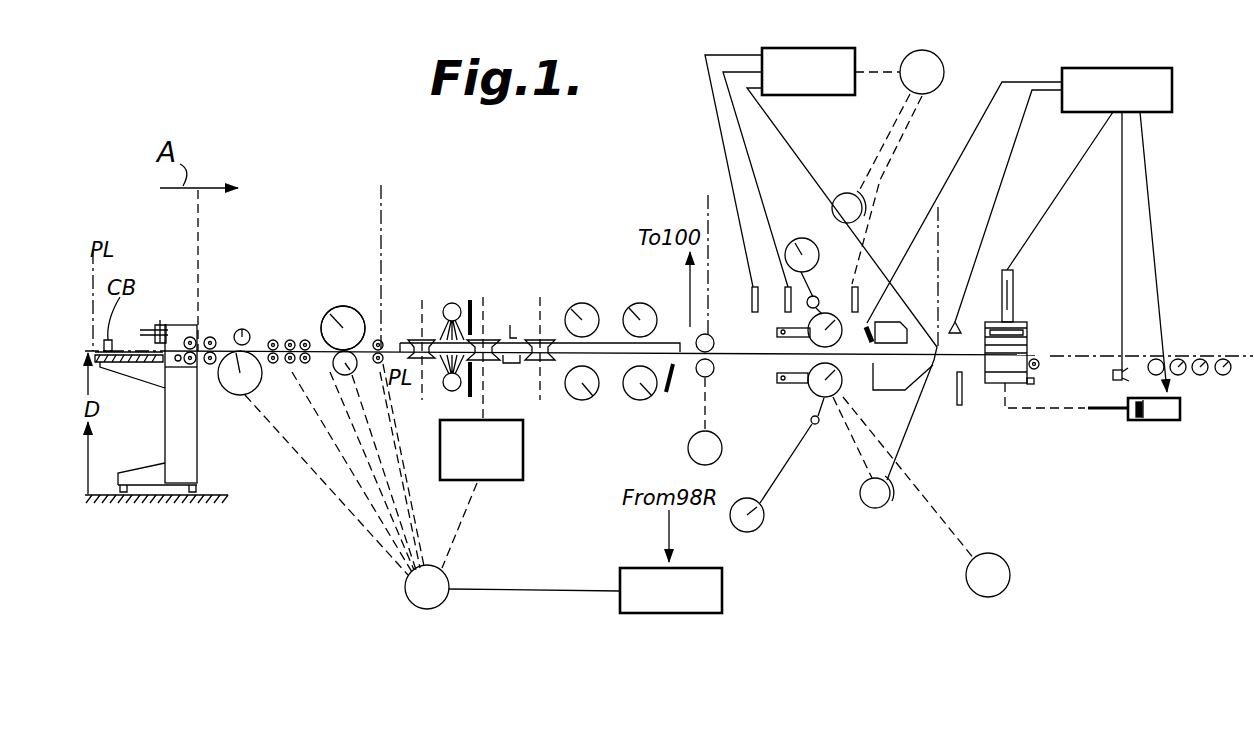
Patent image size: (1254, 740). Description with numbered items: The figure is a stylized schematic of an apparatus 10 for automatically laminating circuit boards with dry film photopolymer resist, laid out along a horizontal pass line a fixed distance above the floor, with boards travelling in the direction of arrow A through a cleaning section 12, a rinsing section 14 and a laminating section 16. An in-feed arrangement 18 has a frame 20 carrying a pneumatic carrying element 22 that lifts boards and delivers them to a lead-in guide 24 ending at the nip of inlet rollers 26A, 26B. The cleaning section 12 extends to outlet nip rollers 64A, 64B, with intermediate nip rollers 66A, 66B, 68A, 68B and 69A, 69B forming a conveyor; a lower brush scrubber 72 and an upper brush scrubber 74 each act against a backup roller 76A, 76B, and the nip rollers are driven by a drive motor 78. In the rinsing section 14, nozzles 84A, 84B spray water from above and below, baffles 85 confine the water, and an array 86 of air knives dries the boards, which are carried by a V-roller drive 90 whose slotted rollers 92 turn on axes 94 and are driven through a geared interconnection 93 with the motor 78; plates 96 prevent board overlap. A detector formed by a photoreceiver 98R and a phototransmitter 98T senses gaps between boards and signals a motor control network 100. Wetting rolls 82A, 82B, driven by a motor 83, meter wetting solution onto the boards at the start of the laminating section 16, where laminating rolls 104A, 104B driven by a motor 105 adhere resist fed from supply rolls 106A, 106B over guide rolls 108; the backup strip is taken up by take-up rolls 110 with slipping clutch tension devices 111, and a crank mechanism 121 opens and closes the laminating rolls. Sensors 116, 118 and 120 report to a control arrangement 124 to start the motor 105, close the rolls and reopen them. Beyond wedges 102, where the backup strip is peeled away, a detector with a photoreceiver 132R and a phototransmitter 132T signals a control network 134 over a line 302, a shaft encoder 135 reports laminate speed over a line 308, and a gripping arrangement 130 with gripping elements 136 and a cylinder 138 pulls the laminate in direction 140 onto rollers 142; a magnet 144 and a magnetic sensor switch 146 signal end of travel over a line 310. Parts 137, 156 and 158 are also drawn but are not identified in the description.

The apparatus 10 is at (343, 104).
The cleaning section 12 is at (273, 224).
The rinsing section 14 is at (603, 244).
The laminating section 16 is at (908, 219).
The in-feed arrangement 18 is at (175, 286).
The frame 20 is at (183, 452).
The pneumatic carrying element 22 is at (145, 344).
The lead-in guide 24 is at (176, 361).
The inlet nip roller 26A is at (193, 337).
The inlet nip roller 26B is at (190, 365).
The outlet nip roller 64A is at (350, 308).
The outlet nip roller 64B is at (350, 376).
The intermediate nip roller 66A is at (213, 338).
The intermediate nip roller 66B is at (210, 365).
The intermediate nip roller 68A is at (274, 340).
The intermediate nip roller 68B is at (273, 364).
The intermediate nip roller 69A is at (291, 340).
The intermediate nip roller 69B is at (290, 364).
The lower surface brush scrubber 72 is at (240, 396).
The upper surface brush scrubber 74 is at (334, 312).
The backup roller 76A is at (246, 329).
The backup roller 76B is at (310, 363).
The drive motor 78 is at (405, 590).
The wetting roll 82A is at (713, 340).
The wetting roll 82B is at (713, 374).
The drive motor 83 is at (722, 449).
The nozzle 84A is at (449, 303).
The nozzle 84B is at (446, 389).
The baffle 85 is at (468, 300).
The array of air knives 86 is at (592, 306).
The V-roller drive 90 is at (490, 327).
The roller element 92 is at (490, 338).
The geared interconnection 93 is at (523, 447).
The axis 94 is at (414, 338).
The plate 96 is at (512, 332).
The photoreceiver 98R is at (650, 300).
The phototransmitter 98T is at (668, 394).
The motor control network 100 is at (630, 568).
The wedge 102 is at (906, 322).
The laminating roll 104A is at (826, 313).
The laminating roll 104B is at (830, 398).
The motor 105 is at (942, 60).
The supply roll 106A is at (802, 238).
The supply roll 106B is at (763, 507).
The guide roll 108 is at (811, 421).
The take-up roll 110 is at (834, 200).
The continuously slipping clutch tension device 111 is at (848, 193).
The sensor 116 is at (756, 287).
The sensor 118 is at (782, 301).
The sensor 120 is at (880, 232).
The crank mechanism 121 is at (770, 366).
The control arrangement 124 is at (832, 48).
The gripping arrangement 130 is at (1044, 333).
The photoreceiver 132R is at (953, 320).
The phototransmitter 132T is at (957, 400).
The control network 134 is at (1160, 50).
The shaft encoder 135 is at (886, 332).
The gripping element 136 is at (985, 322).
The piston rod 137 is at (1013, 290).
The cylinder 138 is at (1170, 421).
The direction 140 is at (1132, 433).
The roller 142 is at (1222, 359).
The magnet 144 is at (1012, 410).
The magnetic sensor switch 146 is at (1113, 378).
The bracket 156 is at (773, 340).
The bracket 158 is at (795, 384).
The line 302 is at (998, 192).
The line 308 is at (957, 178).
The line 310 is at (1123, 308).